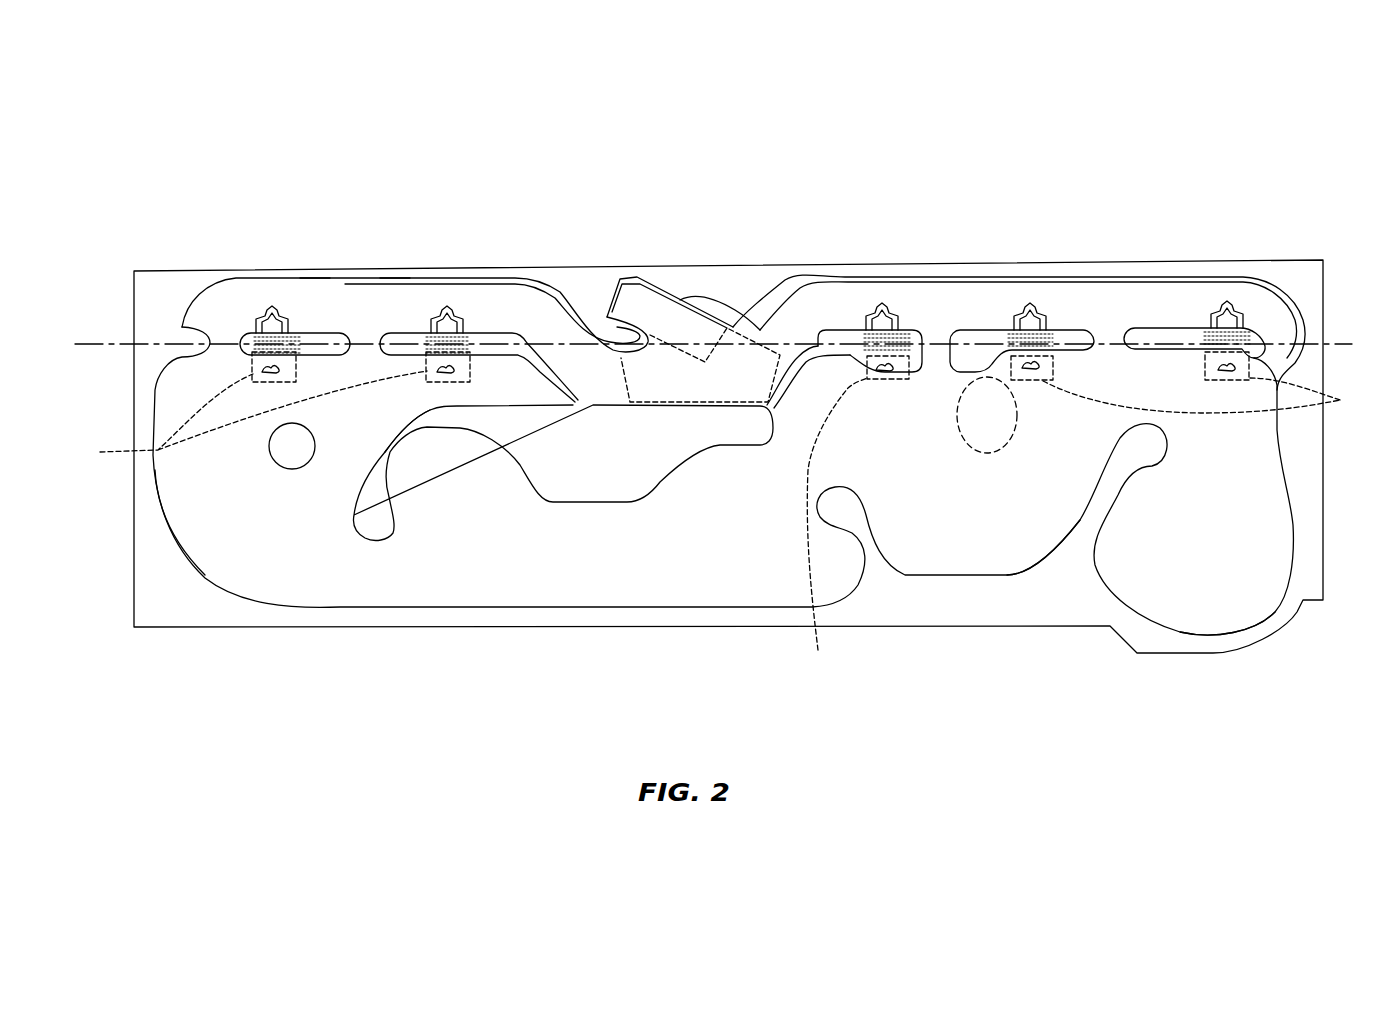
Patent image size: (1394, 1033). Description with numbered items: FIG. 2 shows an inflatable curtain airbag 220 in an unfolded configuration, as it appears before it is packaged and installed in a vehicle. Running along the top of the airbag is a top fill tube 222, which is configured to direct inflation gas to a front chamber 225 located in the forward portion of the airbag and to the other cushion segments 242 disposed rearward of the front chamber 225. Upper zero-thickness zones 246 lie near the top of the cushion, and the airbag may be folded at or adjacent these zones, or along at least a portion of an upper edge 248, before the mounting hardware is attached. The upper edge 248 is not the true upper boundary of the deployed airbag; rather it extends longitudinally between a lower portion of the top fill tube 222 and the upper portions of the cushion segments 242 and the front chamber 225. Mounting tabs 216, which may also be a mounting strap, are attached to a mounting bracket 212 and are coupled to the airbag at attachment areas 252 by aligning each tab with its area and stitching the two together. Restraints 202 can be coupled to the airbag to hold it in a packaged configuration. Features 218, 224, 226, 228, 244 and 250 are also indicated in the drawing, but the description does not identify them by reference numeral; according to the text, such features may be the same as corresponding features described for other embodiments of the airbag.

The restraints 202 is at (1355, 400).
The mounting bracket 212 is at (273, 305).
The mounting tabs 216 is at (296, 280).
The plate 218 is at (680, 318).
The inflatable curtain airbag 220 is at (1236, 156).
The top fill tube 222 is at (357, 277).
The sensor opening 224 is at (986, 426).
The front chamber 225 is at (203, 520).
The connector 226 is at (770, 333).
The wall segment 228 is at (932, 334).
The cushion segments 242 is at (442, 473).
The boss 244 is at (291, 455).
The upper zero-thickness zones 246 is at (313, 278).
The upper edge 248 is at (98, 336).
The carrier body 250 is at (160, 364).
The attachment areas 252 is at (240, 337).